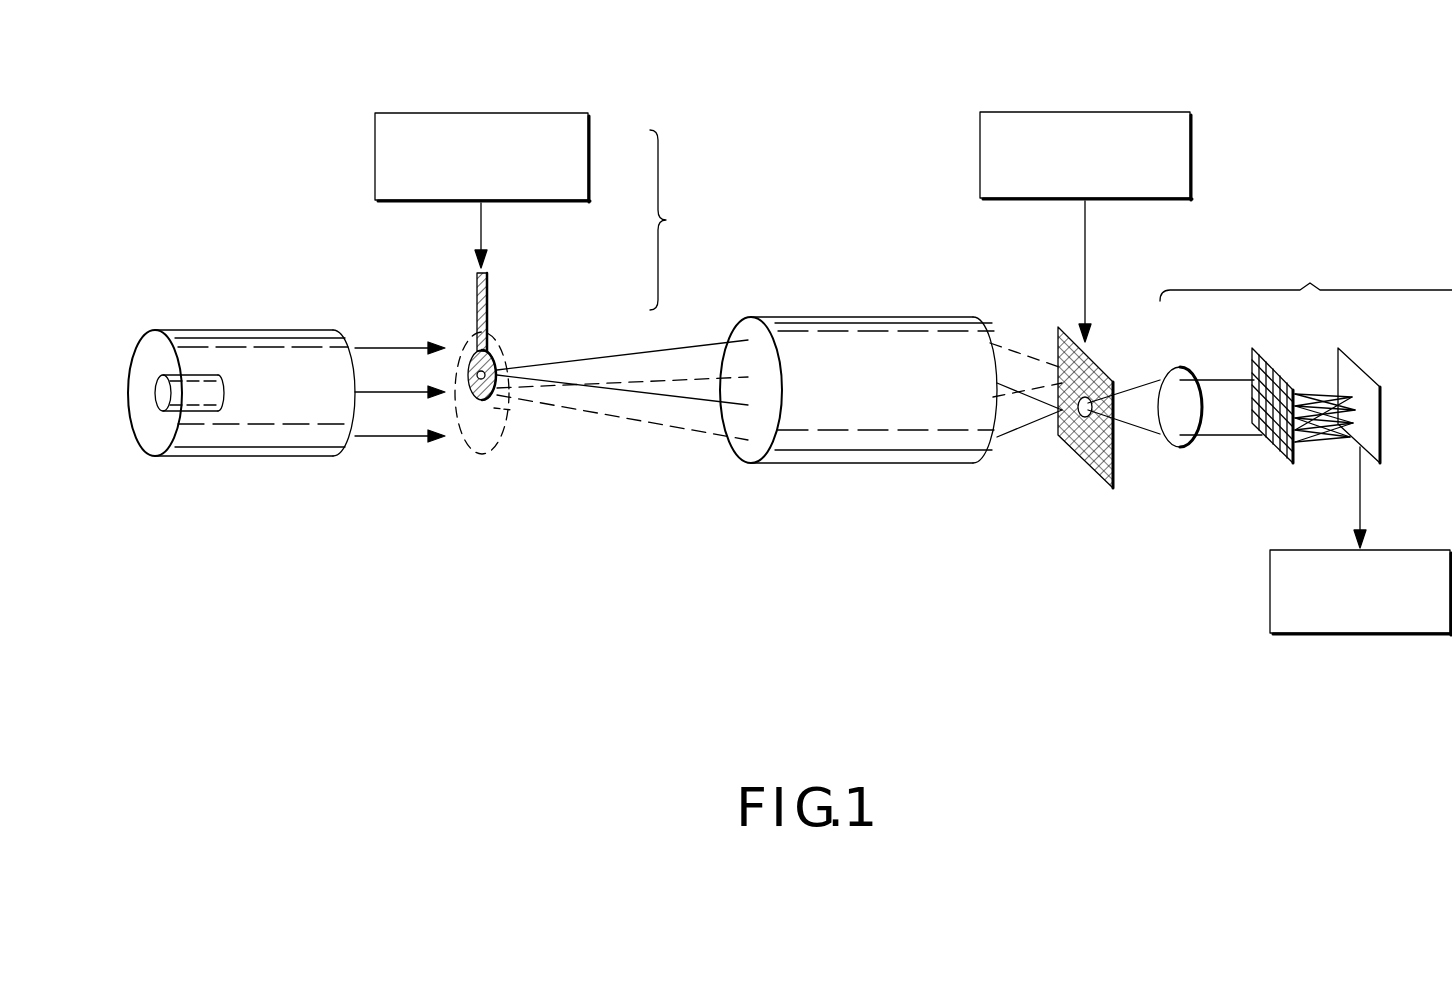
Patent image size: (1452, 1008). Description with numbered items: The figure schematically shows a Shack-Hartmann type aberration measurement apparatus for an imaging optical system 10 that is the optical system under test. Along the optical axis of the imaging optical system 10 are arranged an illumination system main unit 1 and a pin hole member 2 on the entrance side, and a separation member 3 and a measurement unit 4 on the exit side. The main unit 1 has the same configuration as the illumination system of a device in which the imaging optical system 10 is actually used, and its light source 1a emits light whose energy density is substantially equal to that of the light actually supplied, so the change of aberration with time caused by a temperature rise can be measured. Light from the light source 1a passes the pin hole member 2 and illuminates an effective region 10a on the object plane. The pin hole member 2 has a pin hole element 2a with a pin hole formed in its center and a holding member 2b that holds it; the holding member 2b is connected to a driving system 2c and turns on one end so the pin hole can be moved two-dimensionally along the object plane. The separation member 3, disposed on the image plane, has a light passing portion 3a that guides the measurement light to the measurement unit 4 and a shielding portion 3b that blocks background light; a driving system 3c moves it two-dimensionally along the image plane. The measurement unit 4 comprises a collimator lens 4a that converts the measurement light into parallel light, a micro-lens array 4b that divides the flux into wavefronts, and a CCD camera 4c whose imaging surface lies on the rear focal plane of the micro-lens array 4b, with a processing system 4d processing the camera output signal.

The illumination system main unit 1 is at (288, 312).
The light source 1a is at (197, 375).
The pin hole member 2 is at (670, 220).
The pin hole element 2a is at (497, 345).
The holding member 2b is at (490, 283).
The driving system 2c is at (590, 157).
The imaging optical system 10 is at (886, 317).
The effective region 10a is at (488, 454).
The separation member 3 is at (1092, 476).
The light passing portion 3a is at (1063, 440).
The shielding portion 3b is at (1115, 460).
The driving system 3c is at (1193, 157).
The measurement unit 4 is at (1306, 276).
The collimator lens 4a is at (1182, 368).
The micro-lens array 4b is at (1278, 362).
The CCD camera 4c is at (1360, 365).
The processing system 4d is at (1428, 548).